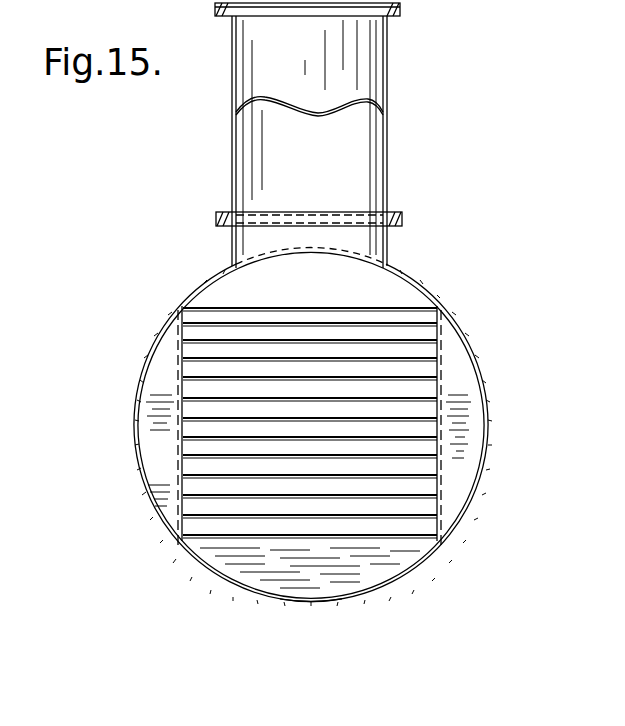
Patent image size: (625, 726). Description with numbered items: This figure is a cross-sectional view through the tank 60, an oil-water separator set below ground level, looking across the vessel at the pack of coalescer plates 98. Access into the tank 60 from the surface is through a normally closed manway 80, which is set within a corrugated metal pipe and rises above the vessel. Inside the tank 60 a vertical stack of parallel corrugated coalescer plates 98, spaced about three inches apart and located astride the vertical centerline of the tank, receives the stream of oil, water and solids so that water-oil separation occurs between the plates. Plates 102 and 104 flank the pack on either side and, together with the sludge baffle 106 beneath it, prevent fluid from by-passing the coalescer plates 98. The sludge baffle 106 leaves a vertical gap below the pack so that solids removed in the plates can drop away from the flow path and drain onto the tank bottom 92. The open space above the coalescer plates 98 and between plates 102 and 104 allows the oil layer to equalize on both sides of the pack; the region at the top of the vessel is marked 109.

The tank 60 is at (471, 328).
The manway 80 is at (373, 62).
The neck opening 109 is at (355, 280).
The coalescer plates 98 is at (303, 331).
The plate 102 is at (467, 392).
The plate 104 is at (150, 393).
The sludge baffle 106 is at (350, 567).
The tank bottom 92 is at (313, 603).